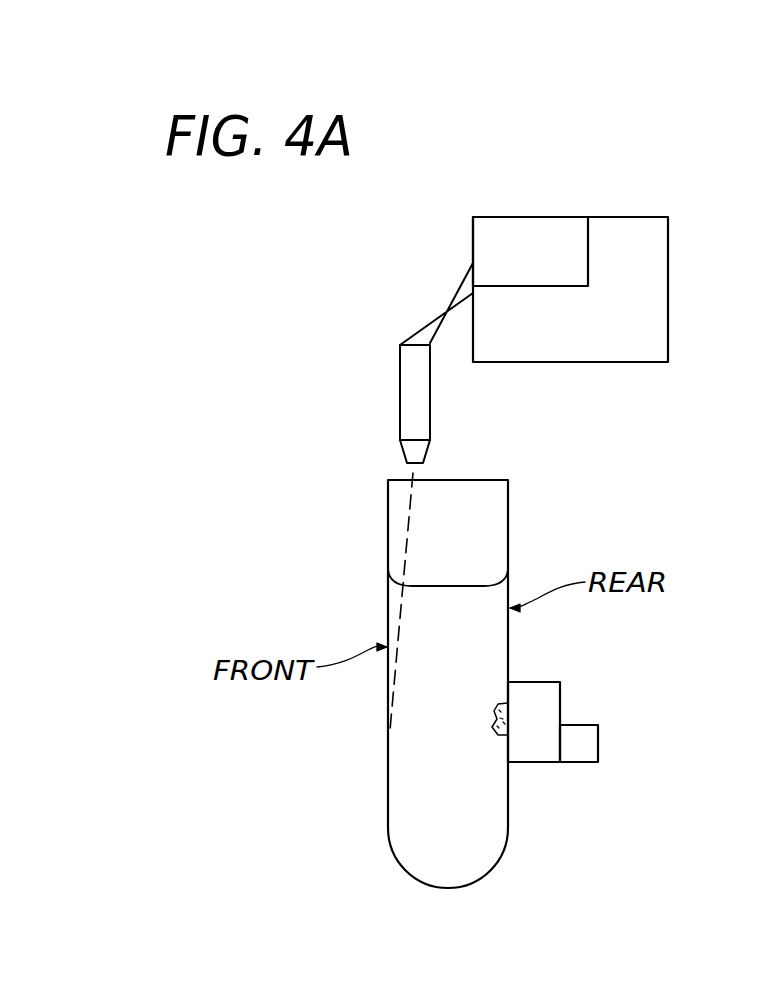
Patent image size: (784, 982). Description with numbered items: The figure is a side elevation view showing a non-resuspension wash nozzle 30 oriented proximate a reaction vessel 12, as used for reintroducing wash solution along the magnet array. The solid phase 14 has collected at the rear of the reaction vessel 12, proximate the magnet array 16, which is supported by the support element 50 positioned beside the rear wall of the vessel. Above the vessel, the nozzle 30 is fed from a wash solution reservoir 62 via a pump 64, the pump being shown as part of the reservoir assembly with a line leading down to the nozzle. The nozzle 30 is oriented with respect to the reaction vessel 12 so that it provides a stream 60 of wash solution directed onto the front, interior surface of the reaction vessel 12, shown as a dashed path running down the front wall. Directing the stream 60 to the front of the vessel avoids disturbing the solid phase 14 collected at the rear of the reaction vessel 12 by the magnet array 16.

The reaction vessel 12 is at (388, 505).
The solid phase 14 is at (497, 733).
The magnet array 16 is at (538, 692).
The nozzle 30 is at (400, 388).
The support element 50 is at (587, 742).
The stream 60 is at (403, 542).
The wash solution reservoir 62 is at (657, 295).
The pump 64 is at (547, 223).